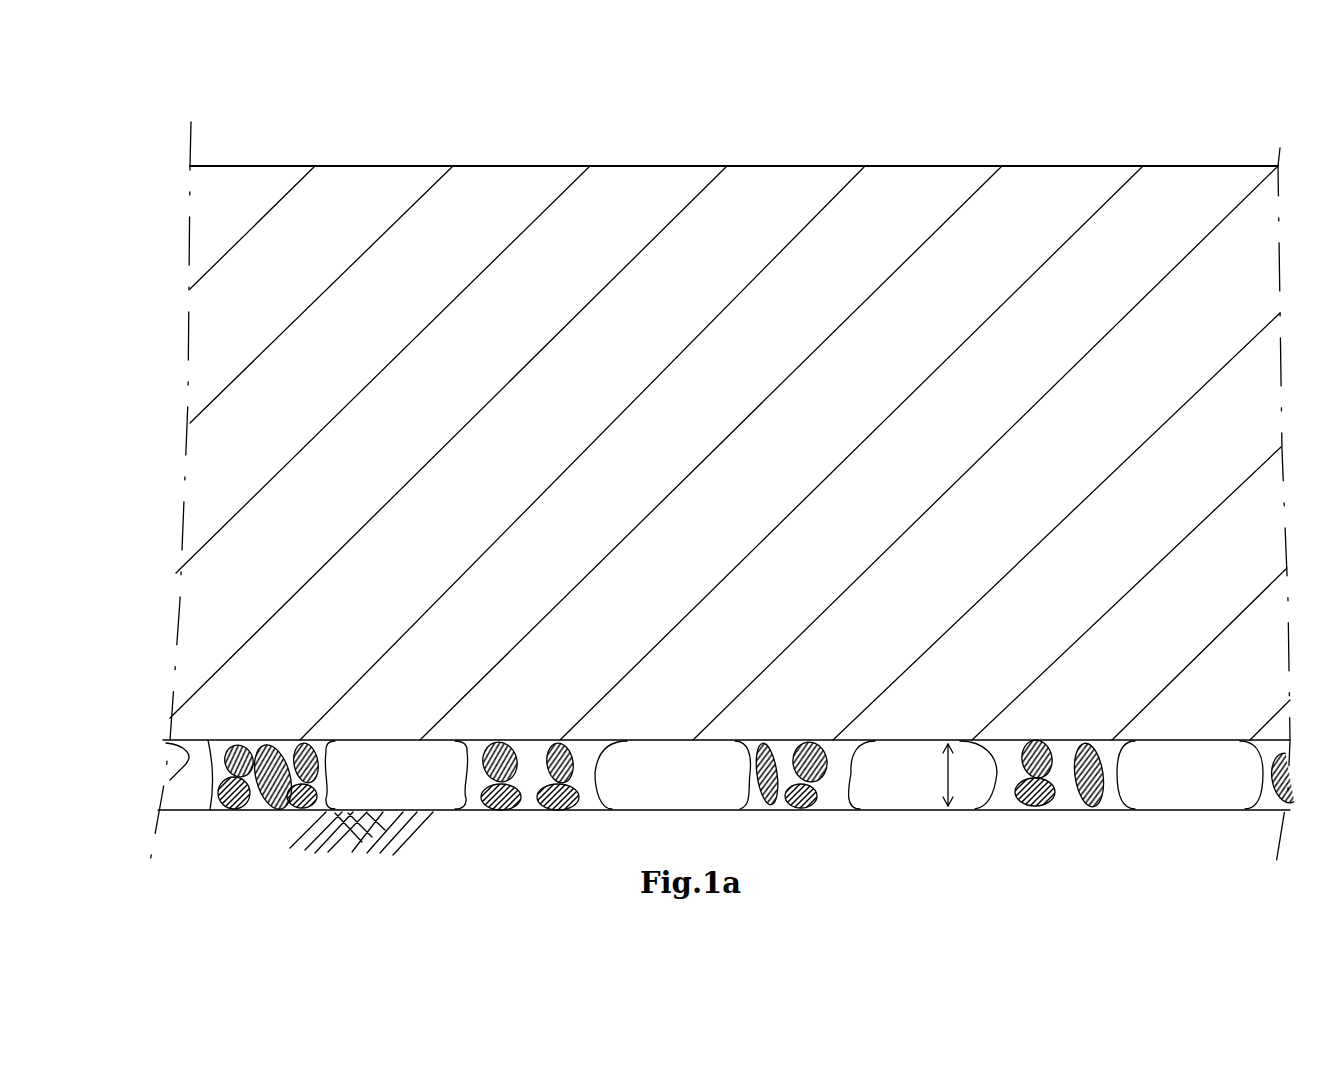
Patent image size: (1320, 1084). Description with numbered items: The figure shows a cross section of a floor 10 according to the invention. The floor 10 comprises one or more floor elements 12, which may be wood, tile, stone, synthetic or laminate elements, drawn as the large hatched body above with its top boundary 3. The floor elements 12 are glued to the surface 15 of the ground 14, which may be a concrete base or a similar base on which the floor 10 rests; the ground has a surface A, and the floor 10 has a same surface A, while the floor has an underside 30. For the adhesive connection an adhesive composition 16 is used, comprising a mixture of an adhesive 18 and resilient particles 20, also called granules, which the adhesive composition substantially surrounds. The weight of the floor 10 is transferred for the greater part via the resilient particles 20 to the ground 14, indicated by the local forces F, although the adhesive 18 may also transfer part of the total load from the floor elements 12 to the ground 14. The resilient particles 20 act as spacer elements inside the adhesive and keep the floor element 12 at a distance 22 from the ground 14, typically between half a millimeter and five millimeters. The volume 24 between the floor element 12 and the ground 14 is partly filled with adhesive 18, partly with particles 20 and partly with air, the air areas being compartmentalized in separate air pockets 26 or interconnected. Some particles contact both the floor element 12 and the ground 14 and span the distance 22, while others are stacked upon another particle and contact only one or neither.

The floor 10 is at (173, 472).
The top surface 3 is at (465, 166).
The floor element 12 is at (490, 488).
The ground 14 is at (477, 856).
The surface of the ground 15 is at (1190, 800).
The adhesive composition 16 is at (461, 779).
The adhesive 18 is at (210, 812).
The resilient particles 20 is at (227, 803).
The distance 22 is at (947, 773).
The volume 24 is at (640, 788).
The air pockets 26 is at (198, 799).
The underside 30 is at (171, 759).
The surface A is at (705, 807).
The local force F is at (238, 738).